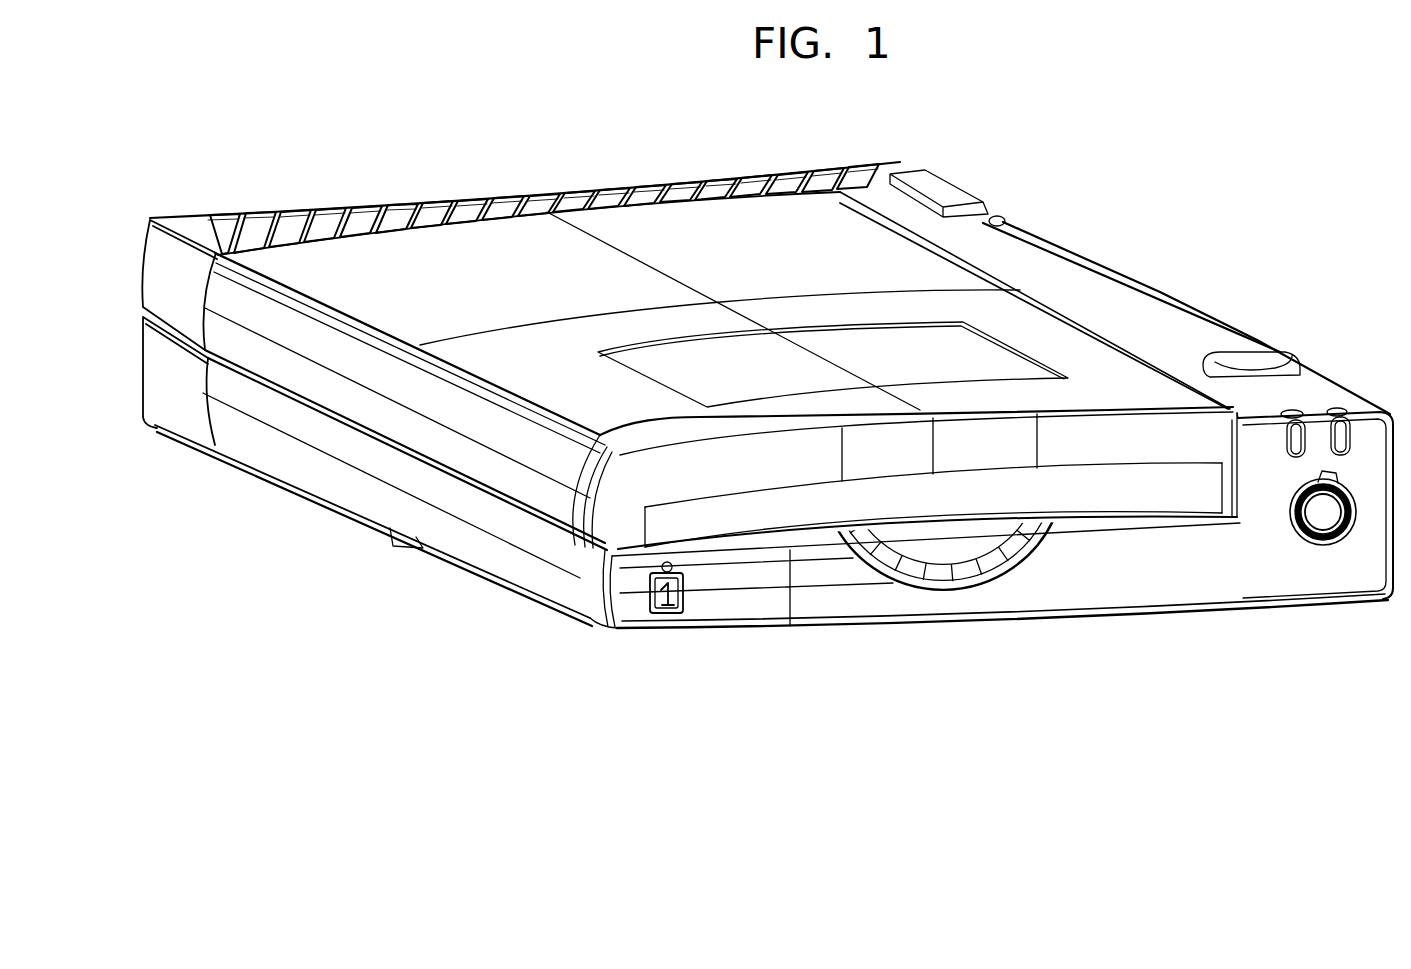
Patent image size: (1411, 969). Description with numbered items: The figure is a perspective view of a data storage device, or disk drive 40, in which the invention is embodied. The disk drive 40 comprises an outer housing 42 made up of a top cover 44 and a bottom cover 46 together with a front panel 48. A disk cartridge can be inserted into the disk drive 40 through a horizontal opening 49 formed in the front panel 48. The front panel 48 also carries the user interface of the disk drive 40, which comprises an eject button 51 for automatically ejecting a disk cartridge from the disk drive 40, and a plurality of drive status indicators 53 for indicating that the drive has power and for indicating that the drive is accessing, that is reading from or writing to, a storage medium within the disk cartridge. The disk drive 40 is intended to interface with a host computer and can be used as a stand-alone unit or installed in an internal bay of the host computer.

The disk drive 40 is at (420, 147).
The outer housing 42 is at (745, 235).
The top cover 44 is at (167, 260).
The bottom cover 46 is at (165, 402).
The front panel 48 is at (1245, 583).
The horizontal opening 49 is at (945, 486).
The eject button 51 is at (1322, 515).
The drive status indicators 53 is at (1295, 430).